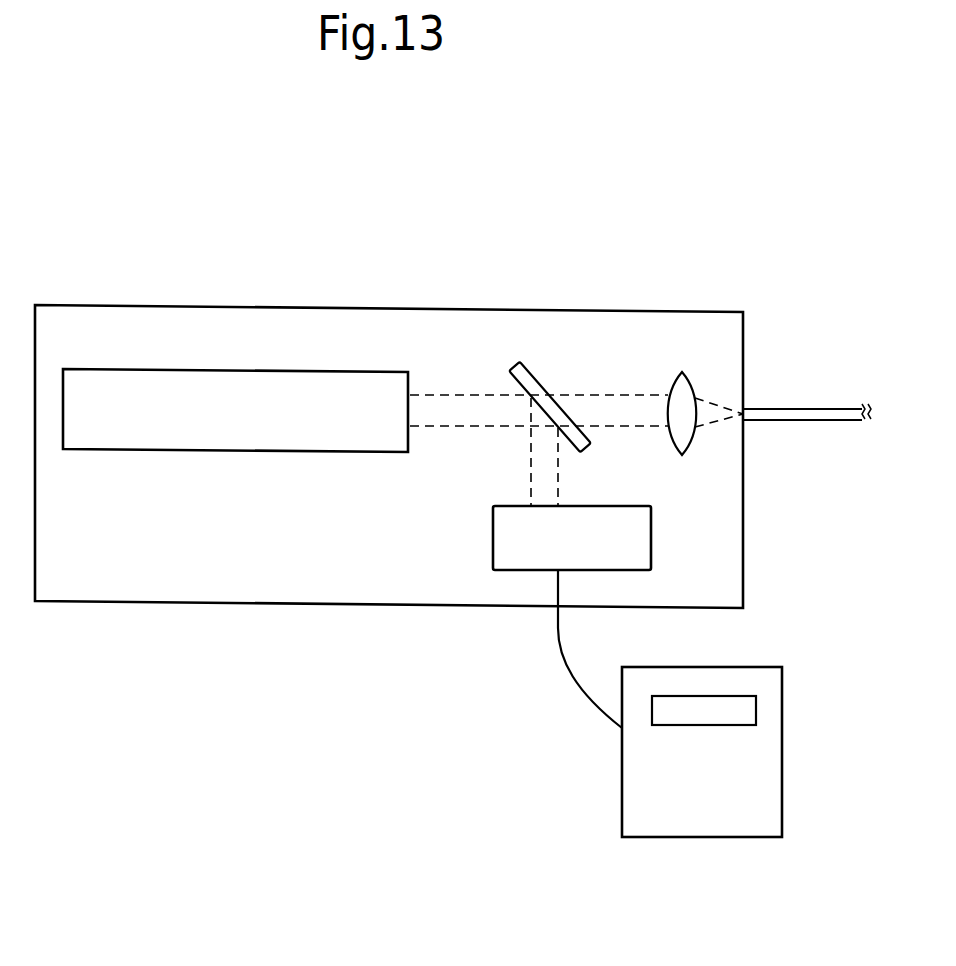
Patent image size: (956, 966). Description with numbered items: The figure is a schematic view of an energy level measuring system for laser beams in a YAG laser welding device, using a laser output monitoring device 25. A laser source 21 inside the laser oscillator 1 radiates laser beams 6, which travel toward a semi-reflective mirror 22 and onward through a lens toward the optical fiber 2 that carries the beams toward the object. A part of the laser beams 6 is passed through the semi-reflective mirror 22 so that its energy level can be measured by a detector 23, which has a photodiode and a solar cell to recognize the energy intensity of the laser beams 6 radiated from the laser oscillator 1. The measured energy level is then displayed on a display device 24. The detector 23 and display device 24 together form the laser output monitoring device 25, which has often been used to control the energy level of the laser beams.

The laser oscillator 1 is at (174, 588).
The optical fiber 2 is at (800, 418).
The laser beams 6 is at (476, 418).
The laser source 21 is at (90, 388).
The semi-reflective mirror 22 is at (530, 373).
The detector 23 is at (543, 571).
The display device 24 is at (627, 802).
The laser output monitoring device 25 is at (598, 671).